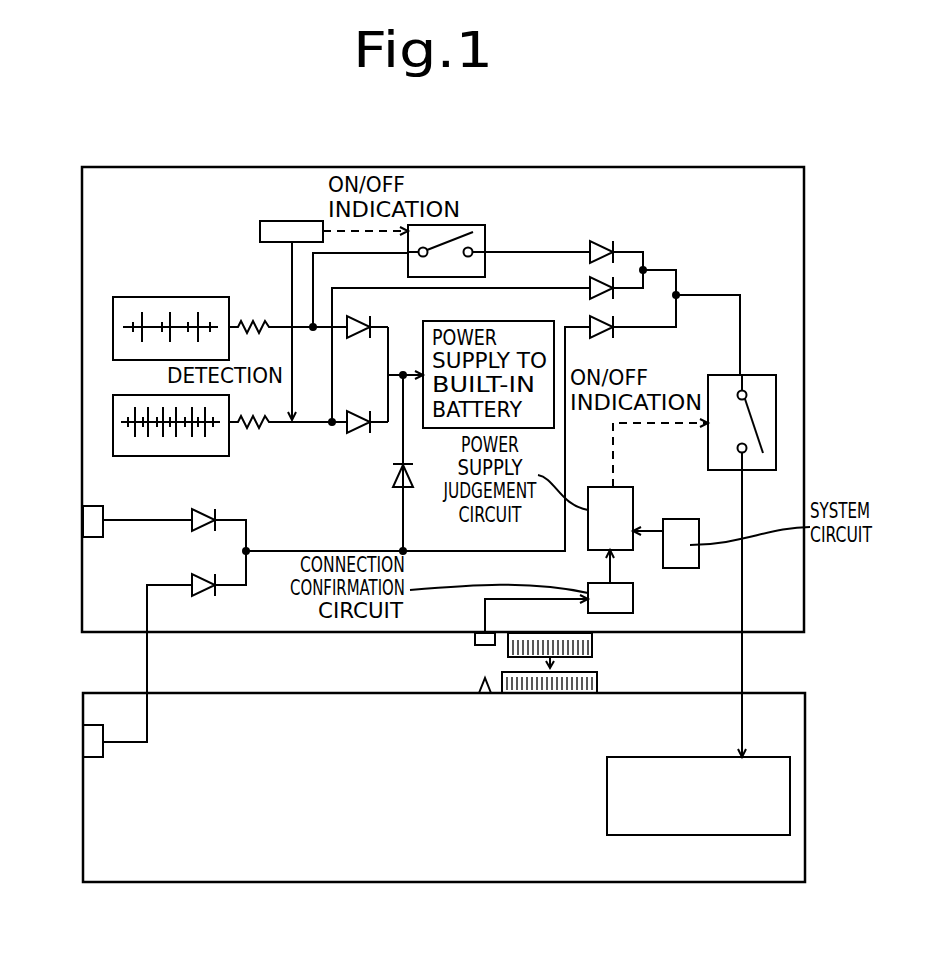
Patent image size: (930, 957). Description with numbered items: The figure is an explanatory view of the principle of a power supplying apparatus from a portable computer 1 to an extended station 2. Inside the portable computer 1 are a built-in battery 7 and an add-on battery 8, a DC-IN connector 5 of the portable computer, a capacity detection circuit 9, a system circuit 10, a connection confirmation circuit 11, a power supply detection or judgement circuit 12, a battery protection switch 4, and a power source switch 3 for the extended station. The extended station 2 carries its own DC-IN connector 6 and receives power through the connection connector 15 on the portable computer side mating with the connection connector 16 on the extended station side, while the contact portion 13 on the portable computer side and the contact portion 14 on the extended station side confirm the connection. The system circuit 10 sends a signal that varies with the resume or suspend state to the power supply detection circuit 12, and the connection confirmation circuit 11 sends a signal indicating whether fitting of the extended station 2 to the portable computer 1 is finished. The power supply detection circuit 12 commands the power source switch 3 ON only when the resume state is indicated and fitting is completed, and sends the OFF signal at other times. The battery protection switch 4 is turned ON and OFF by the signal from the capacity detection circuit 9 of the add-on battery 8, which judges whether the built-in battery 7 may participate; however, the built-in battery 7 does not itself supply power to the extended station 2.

The portable computer 1 is at (318, 633).
The extended station 2 is at (767, 693).
The power source switch for the extended station 3 is at (758, 375).
The battery protection switch 4 is at (475, 225).
The DC-IN connector of the portable computer 5 is at (84, 520).
The DC-IN connector of the extended station 6 is at (84, 742).
The built-in battery 7 is at (135, 297).
The add-on battery 8 is at (140, 456).
The capacity detection circuit 9 is at (260, 231).
The system circuit 10 is at (677, 519).
The connection confirmation circuit 11 is at (633, 600).
The power supply detection or judgement circuit 12 is at (623, 487).
The contact portion for confirming the connection on the portable computer side 13 is at (475, 640).
The contact portion for confirming the connection on the extended station side 14 is at (480, 690).
The connection connector on the portable computer side 15 is at (592, 642).
The connection connector on the extended station side 16 is at (597, 681).